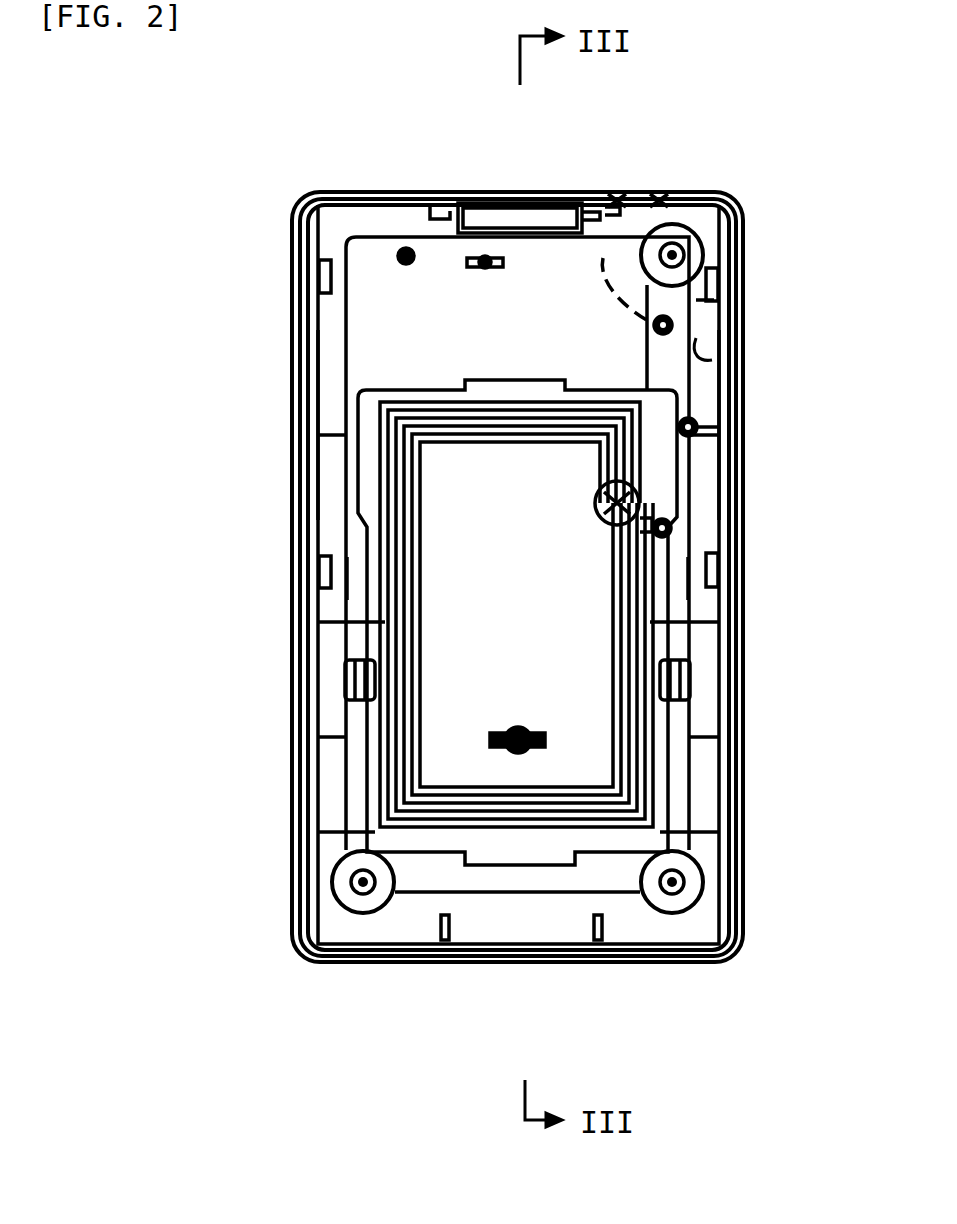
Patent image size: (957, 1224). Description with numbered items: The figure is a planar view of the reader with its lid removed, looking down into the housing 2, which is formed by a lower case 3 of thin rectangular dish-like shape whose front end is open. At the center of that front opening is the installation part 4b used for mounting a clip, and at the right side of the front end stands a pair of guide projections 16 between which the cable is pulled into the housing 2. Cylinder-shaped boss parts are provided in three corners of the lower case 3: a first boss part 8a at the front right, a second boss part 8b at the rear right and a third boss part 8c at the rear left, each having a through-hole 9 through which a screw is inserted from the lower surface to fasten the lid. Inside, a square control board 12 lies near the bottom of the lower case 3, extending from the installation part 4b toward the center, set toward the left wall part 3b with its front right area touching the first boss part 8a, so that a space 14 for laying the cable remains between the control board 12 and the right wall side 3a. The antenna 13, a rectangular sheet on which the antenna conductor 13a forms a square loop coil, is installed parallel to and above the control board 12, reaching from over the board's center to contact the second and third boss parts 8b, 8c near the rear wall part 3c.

The housing 2 is at (745, 549).
The lower case 3 is at (293, 665).
The right wall side 3a is at (740, 423).
The left wall part 3b is at (300, 425).
The rear wall part 3c is at (515, 964).
The installation part 4b is at (500, 213).
The first boss part 8a is at (683, 232).
The second boss part 8b is at (704, 882).
The third boss part 8c is at (332, 882).
The through-hole 9 is at (676, 257).
The control board 12 is at (395, 318).
The antenna 13 is at (370, 545).
The antenna conductor 13a is at (640, 598).
The space 14 is at (698, 340).
The guide projections 16 is at (660, 194).